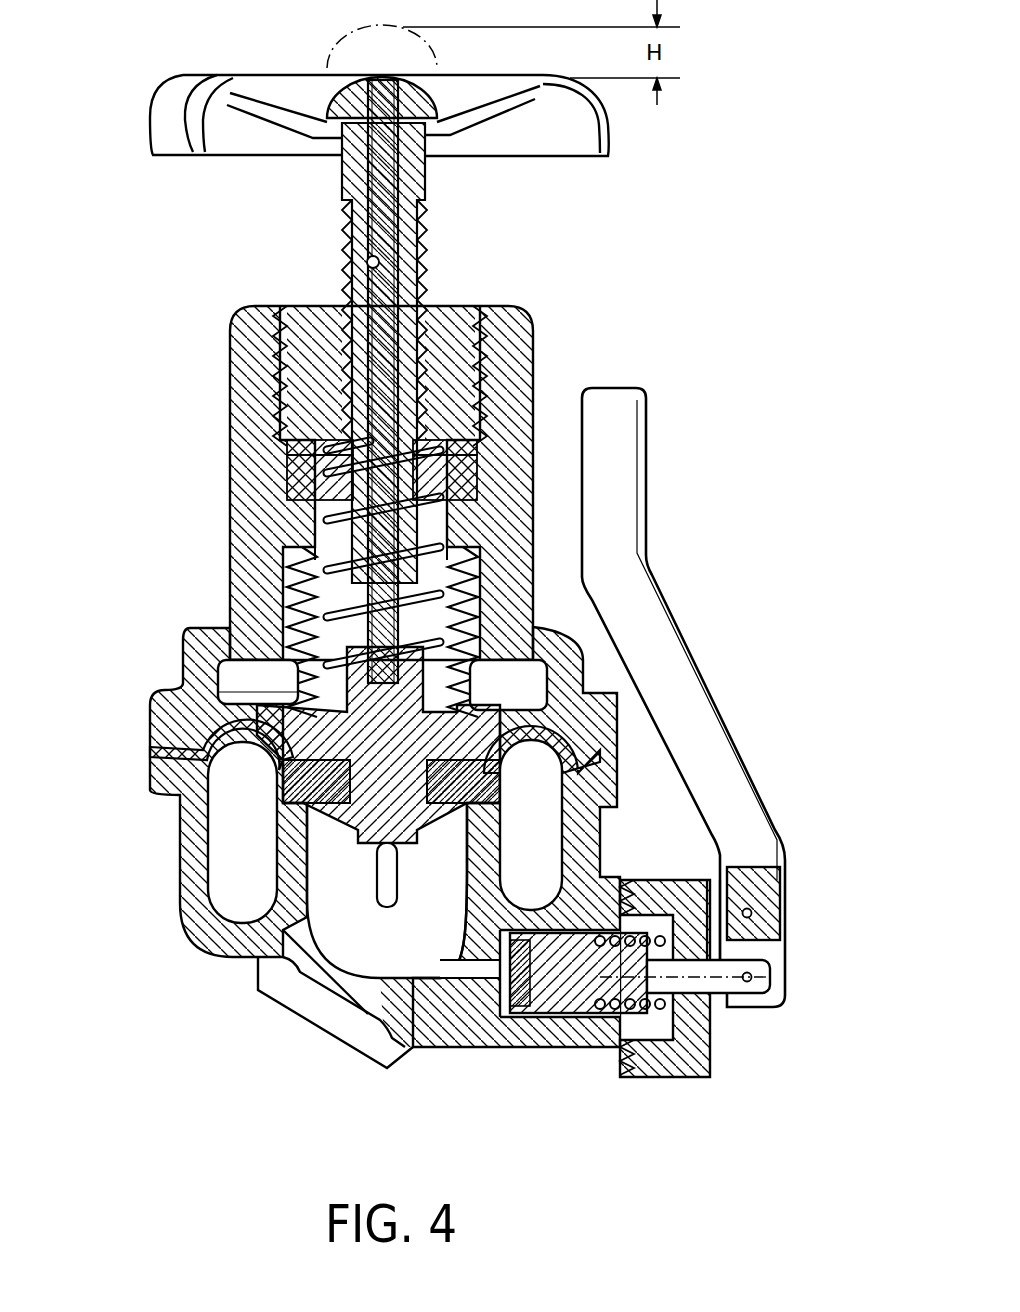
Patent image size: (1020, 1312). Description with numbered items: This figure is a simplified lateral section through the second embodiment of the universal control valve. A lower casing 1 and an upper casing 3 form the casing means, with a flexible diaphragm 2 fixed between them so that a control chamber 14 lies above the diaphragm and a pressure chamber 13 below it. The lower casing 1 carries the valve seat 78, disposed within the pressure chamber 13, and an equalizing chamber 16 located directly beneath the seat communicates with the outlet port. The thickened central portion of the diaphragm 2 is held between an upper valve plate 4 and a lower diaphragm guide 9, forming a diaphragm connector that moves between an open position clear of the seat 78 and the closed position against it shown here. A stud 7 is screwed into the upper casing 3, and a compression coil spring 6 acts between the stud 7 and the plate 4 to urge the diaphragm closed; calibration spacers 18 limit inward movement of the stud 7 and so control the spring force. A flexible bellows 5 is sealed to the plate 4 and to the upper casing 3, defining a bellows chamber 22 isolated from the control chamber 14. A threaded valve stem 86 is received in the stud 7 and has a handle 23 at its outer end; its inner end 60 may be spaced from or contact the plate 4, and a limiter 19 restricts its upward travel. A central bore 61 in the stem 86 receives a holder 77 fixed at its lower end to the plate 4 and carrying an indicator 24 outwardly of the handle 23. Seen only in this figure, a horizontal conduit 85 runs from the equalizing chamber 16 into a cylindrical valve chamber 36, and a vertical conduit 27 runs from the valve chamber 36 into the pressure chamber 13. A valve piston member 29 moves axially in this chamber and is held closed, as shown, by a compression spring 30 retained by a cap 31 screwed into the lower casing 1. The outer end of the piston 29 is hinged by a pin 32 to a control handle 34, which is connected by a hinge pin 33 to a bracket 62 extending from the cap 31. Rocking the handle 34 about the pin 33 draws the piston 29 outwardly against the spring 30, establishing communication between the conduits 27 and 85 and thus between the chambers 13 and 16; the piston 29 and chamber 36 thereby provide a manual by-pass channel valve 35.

The lower casing 1 is at (200, 925).
The flexible diaphragm 2 is at (483, 783).
The upper casing 3 is at (245, 358).
The upper valve plate 4 is at (240, 668).
The bellows 5 is at (480, 595).
The compression coil spring 6 is at (327, 520).
The stud 7 is at (440, 350).
The lower diaphragm guide 9 is at (440, 812).
The pressure chamber 13 is at (232, 777).
The control chamber 14 is at (240, 680).
The equalizing chamber 16 is at (357, 880).
The calibration spacers 18 is at (287, 478).
The limiter 19 is at (287, 450).
The bellows chamber 22 is at (343, 594).
The handle 23 is at (560, 135).
The indicator 24 is at (370, 78).
The vertical conduit 27 is at (570, 858).
The valve piston member 29 is at (710, 1020).
The compression spring 30 is at (603, 1012).
The cap 31 is at (683, 1078).
The pin 32 is at (763, 1000).
The hinge pin 33 is at (752, 912).
The control handle 34 is at (617, 472).
The manual by-pass channel valve 35 is at (567, 1022).
The cylindrical valve chamber 36 is at (518, 1015).
The inner end 60 is at (305, 580).
The central bore 61 is at (368, 266).
The bracket 62 is at (712, 880).
The holder 77 is at (383, 232).
The valve seat 78 is at (280, 837).
The horizontal conduit 85 is at (460, 968).
The valve stem 86 is at (342, 226).